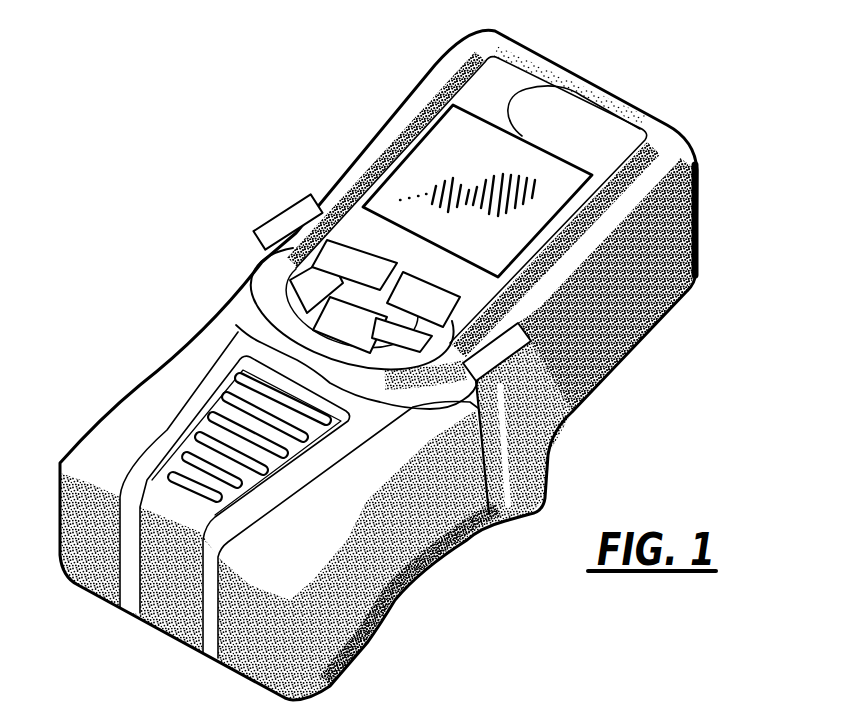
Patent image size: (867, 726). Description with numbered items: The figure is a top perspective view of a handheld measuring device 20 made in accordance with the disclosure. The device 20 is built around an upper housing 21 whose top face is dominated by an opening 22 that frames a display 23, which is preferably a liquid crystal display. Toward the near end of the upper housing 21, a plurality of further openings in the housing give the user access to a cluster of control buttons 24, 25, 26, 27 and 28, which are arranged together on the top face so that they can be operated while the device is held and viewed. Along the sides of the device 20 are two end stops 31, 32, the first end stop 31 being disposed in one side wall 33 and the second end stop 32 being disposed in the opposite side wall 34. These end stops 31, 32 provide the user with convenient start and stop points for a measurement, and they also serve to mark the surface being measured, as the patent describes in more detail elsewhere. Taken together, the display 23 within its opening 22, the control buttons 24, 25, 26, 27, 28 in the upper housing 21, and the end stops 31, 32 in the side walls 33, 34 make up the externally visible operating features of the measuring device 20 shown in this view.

The measuring device 20 is at (158, 182).
The upper housing 21 is at (434, 66).
The opening 22 is at (560, 82).
The display 23 is at (477, 166).
The control button 24 is at (378, 266).
The control button 25 is at (423, 290).
The control button 26 is at (300, 349).
The control button 27 is at (250, 270).
The control button 28 is at (431, 352).
The end stop 31 is at (550, 494).
The end stop 32 is at (274, 212).
The side wall 33 is at (678, 288).
The side wall 34 is at (377, 133).